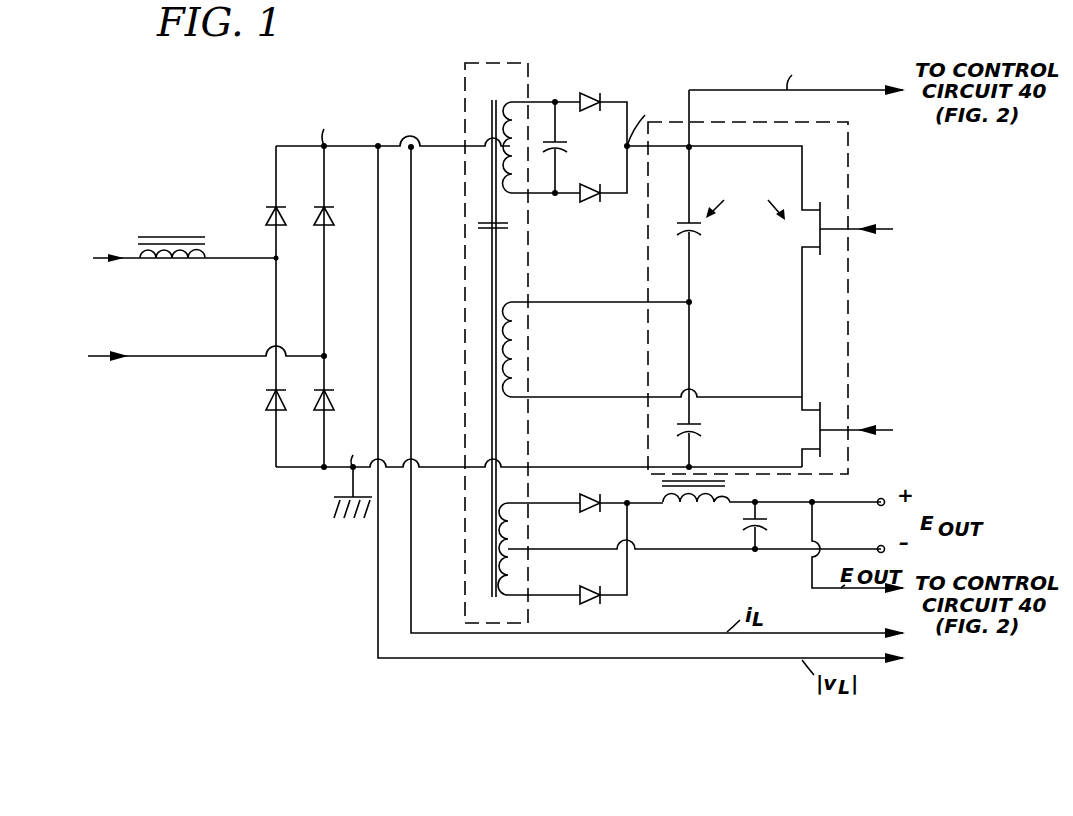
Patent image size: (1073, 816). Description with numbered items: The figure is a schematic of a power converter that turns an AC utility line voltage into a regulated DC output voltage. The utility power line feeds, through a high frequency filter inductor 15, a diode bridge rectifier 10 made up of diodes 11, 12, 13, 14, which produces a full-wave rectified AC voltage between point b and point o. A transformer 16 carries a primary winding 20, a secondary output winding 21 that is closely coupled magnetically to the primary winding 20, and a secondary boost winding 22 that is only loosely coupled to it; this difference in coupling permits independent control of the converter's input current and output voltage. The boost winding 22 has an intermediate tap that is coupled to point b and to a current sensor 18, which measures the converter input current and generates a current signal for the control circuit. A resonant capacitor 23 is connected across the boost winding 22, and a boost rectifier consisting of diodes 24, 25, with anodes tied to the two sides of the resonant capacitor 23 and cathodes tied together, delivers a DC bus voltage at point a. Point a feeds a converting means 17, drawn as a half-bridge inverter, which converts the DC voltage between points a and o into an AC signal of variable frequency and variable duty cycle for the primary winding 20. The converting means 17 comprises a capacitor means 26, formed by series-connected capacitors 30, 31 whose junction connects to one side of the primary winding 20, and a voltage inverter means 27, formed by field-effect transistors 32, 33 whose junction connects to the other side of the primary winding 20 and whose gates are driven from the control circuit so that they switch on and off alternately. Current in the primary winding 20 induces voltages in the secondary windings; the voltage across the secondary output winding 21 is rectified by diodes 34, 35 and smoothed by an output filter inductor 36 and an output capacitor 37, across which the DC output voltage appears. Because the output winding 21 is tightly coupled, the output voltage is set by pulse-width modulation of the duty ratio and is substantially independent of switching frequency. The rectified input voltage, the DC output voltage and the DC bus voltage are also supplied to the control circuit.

The diode bridge rectifier 10 is at (316, 311).
The diode 11 is at (266, 217).
The diode 12 is at (334, 217).
The diode 13 is at (266, 398).
The diode 14 is at (334, 400).
The high frequency filter inductor 15 is at (176, 260).
The transformer 16 is at (465, 70).
The converting means 17 is at (850, 302).
The current sensor 18 is at (411, 150).
The primary winding 20 is at (512, 300).
The secondary output winding 21 is at (506, 597).
The secondary boost winding 22 is at (512, 100).
The resonant capacitor 23 is at (570, 145).
The diode 24 is at (592, 94).
The diode 25 is at (592, 202).
The capacitor means 26 is at (742, 197).
The voltage inverter means 27 is at (788, 197).
The capacitor 30 is at (685, 222).
The capacitor 31 is at (683, 427).
The field-effect transistor 32 is at (812, 206).
The field-effect transistor 33 is at (810, 406).
The diode 34 is at (596, 508).
The diode 35 is at (590, 584).
The output filter inductor 36 is at (700, 506).
The output capacitor 37 is at (746, 527).